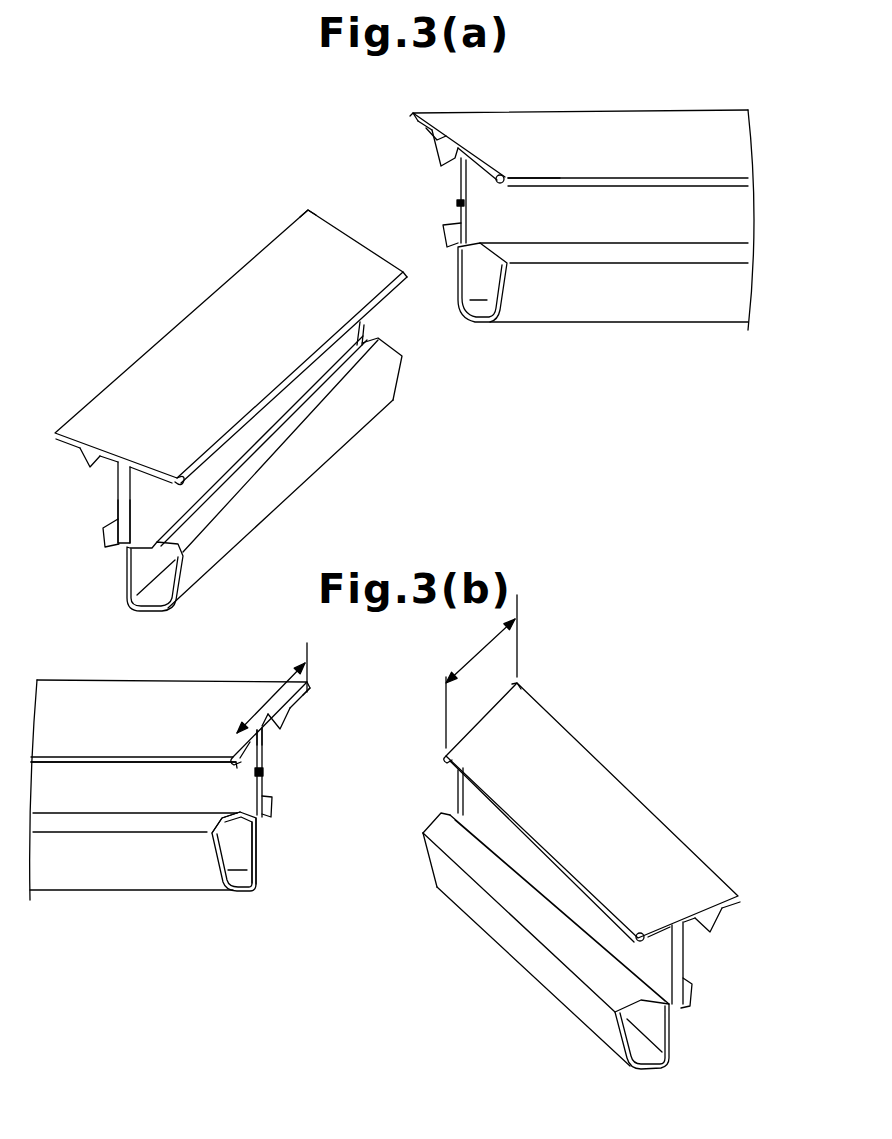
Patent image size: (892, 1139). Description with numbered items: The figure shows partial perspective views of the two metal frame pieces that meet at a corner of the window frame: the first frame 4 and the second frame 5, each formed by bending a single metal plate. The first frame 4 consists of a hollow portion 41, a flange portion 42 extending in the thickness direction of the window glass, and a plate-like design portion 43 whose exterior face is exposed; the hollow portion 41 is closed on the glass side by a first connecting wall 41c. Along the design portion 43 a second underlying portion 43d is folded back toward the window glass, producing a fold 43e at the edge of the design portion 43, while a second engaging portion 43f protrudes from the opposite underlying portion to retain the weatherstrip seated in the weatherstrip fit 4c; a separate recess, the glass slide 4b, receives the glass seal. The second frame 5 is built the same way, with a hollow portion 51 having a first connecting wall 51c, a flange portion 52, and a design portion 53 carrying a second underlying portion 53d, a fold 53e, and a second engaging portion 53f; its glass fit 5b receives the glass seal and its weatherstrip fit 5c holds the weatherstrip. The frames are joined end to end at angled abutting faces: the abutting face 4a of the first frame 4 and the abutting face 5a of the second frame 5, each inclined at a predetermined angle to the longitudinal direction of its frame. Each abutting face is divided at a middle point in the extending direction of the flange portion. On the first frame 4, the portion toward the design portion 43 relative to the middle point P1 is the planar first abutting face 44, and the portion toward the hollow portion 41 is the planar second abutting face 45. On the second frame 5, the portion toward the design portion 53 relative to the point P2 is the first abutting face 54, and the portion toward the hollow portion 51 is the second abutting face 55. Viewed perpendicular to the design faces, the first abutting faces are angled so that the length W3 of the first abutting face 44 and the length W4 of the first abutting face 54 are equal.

In FIG. 3A, the first frame 4 is at (277, 237).
In FIG. 3B, the first frame 4 is at (188, 681).
In FIG. 3A, the abutting face 4a is at (311, 208).
In FIG. 3B, the abutting face 4a is at (310, 690).
In FIG. 3A, the glass slide 4b is at (232, 486).
In FIG. 3B, the glass slide 4b is at (207, 820).
In FIG. 3A, the weatherstrip fit 4c is at (133, 521).
In FIG. 3B, the weatherstrip fit 4c is at (277, 732).
In FIG. 3A, the hollow portion 41 is at (200, 574).
In FIG. 3B, the hollow portion 41 is at (73, 887).
In FIG. 3B, the first connecting wall 41c is at (213, 860).
In FIG. 3A, the flange portion 42 is at (104, 540).
In FIG. 3B, the flange portion 42 is at (130, 773).
In FIG. 3A, the design portion 43 is at (116, 387).
In FIG. 3B, the design portion 43 is at (67, 690).
In FIG. 3A, the second underlying portion 43d is at (169, 476).
In FIG. 3B, the second underlying portion 43d is at (265, 772).
In FIG. 3A, the fold 43e is at (404, 278).
In FIG. 3B, the fold 43e is at (227, 755).
In FIG. 3A, the second engaging portion 43f is at (79, 458).
In FIG. 3B, the second engaging portion 43f is at (297, 717).
In FIG. 3A, the first abutting face 44 is at (357, 240).
In FIG. 3B, the first abutting face 44 is at (268, 747).
In FIG. 3A, the second abutting face 45 is at (410, 391).
In FIG. 3B, the second abutting face 45 is at (267, 820).
In FIG. 3B, the middle point P1 is at (270, 792).
In FIG. 3B, the length of the first abutting face W3 is at (264, 688).
In FIG. 3A, the second frame 5 is at (560, 112).
In FIG. 3B, the second frame 5 is at (596, 748).
In FIG. 3A, the abutting face 5a is at (410, 111).
In FIG. 3B, the abutting face 5a is at (515, 683).
In FIG. 3A, the glass fit 5b is at (738, 253).
In FIG. 3B, the glass fit 5b is at (542, 927).
In FIG. 3A, the weatherstrip fit 5c is at (445, 168).
In FIG. 3B, the weatherstrip fit 5c is at (696, 935).
In FIG. 3A, the hollow portion 51 is at (720, 315).
In FIG. 3B, the hollow portion 51 is at (563, 992).
In FIG. 3B, the first connecting wall 51c is at (423, 838).
In FIG. 3A, the flange portion 52 is at (657, 197).
In FIG. 3A, the design portion 53 is at (700, 112).
In FIG. 3B, the design portion 53 is at (650, 815).
In FIG. 3A, the second underlying portion 53d is at (497, 186).
In FIG. 3B, the second underlying portion 53d is at (656, 921).
In FIG. 3A, the fold 53e is at (527, 177).
In FIG. 3B, the fold 53e is at (452, 756).
In FIG. 3A, the second engaging portion 53f is at (428, 132).
In FIG. 3B, the second engaging portion 53f is at (719, 908).
In FIG. 3A, the first abutting face 54 is at (460, 183).
In FIG. 3B, the first abutting face 54 is at (466, 732).
In FIG. 3A, the second abutting face 55 is at (445, 232).
In FIG. 3B, the second abutting face 55 is at (427, 868).
In FIG. 3A, the middle point P2 is at (456, 203).
In FIG. 3B, the length of the first abutting face W4 is at (481, 671).